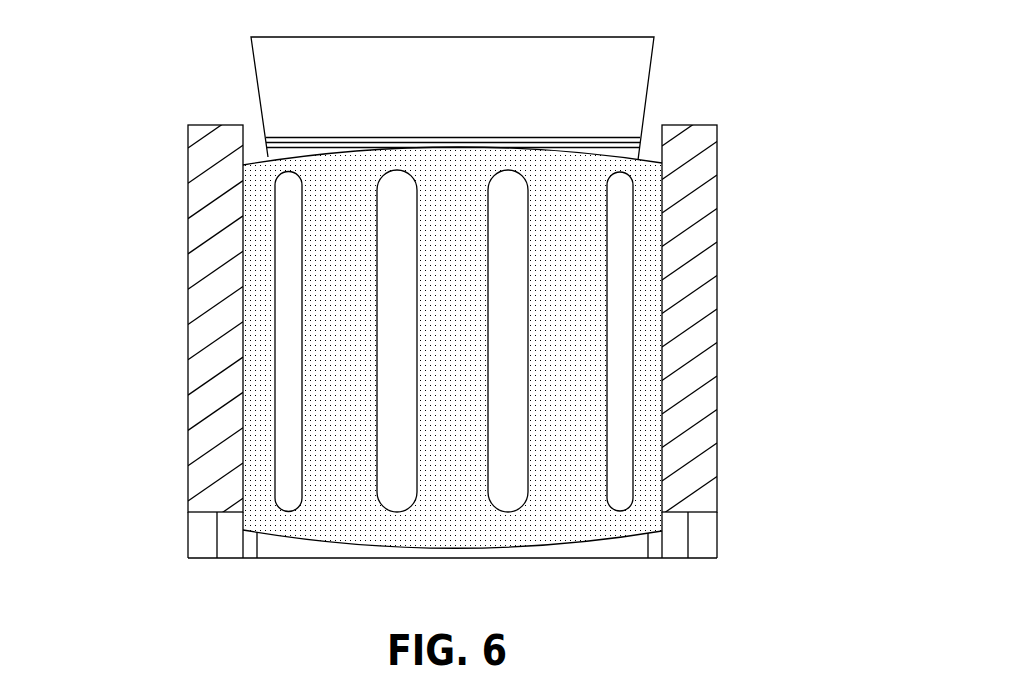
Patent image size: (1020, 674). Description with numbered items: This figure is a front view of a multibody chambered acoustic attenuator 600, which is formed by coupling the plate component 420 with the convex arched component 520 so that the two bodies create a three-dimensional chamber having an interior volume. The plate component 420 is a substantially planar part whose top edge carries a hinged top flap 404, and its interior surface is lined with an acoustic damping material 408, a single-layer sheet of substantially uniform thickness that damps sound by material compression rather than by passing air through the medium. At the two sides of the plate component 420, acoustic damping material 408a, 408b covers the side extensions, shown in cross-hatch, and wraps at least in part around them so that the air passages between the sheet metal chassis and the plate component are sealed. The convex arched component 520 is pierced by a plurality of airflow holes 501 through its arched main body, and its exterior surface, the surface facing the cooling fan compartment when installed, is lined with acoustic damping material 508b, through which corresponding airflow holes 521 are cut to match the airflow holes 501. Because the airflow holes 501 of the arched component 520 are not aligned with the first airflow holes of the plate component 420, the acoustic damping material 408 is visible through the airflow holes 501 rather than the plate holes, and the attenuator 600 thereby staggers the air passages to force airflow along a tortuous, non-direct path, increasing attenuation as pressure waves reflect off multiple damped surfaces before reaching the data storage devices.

The acoustic attenuator 600 is at (148, 92).
The hinged top flap 404 is at (323, 45).
The plate component 420 is at (263, 147).
The acoustic damping material 408a is at (207, 232).
The acoustic damping material 408b is at (700, 240).
The acoustic damping material 408 is at (295, 493).
The airflow holes 501 is at (613, 183).
The airflow holes 521 is at (483, 483).
The convex arched component 520 is at (293, 552).
The acoustic damping material 508b is at (630, 515).